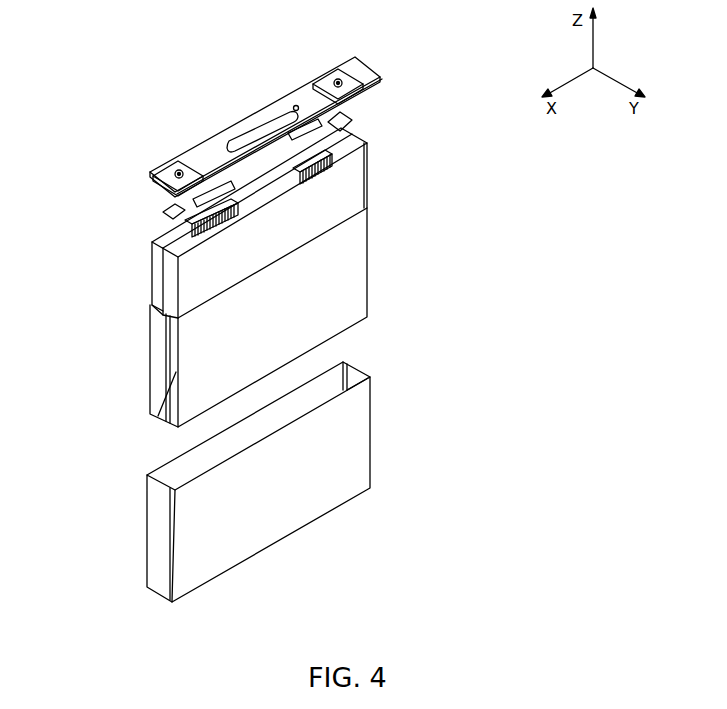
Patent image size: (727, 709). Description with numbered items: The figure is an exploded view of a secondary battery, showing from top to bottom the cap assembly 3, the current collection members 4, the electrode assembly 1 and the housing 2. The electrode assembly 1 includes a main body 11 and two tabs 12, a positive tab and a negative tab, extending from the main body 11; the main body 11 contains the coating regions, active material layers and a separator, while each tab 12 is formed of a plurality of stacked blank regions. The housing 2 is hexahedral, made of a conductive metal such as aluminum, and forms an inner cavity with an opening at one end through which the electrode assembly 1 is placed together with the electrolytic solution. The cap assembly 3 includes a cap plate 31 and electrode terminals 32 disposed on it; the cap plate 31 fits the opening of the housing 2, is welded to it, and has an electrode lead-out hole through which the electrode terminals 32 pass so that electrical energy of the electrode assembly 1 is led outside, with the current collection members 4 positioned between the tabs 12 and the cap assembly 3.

The electrode assembly 1 is at (271, 256).
The main body 11 is at (158, 273).
The tabs 12 is at (236, 223).
The housing 2 is at (360, 438).
The cap assembly 3 is at (214, 111).
The cap plate 31 is at (217, 142).
The electrode terminals 32 is at (331, 68).
The current collection members 4 is at (165, 211).